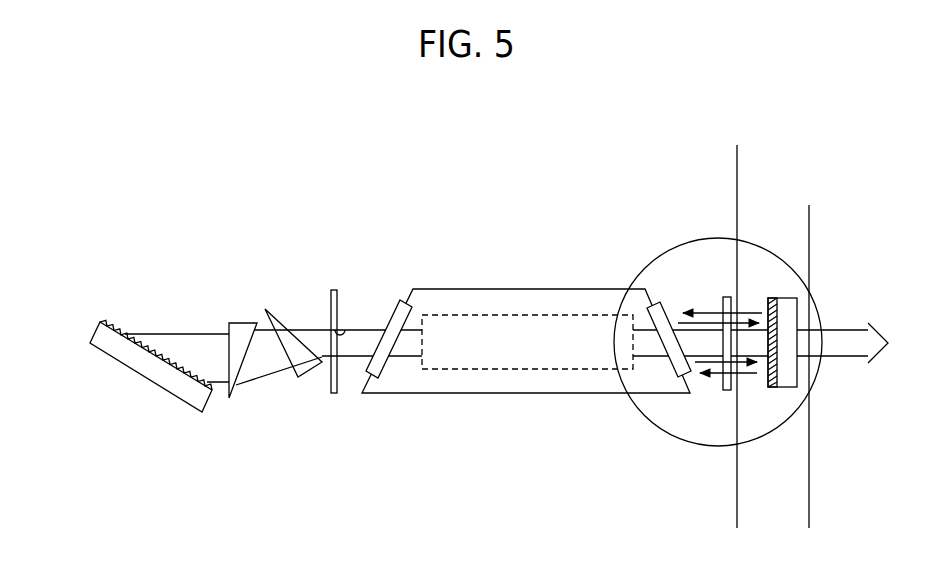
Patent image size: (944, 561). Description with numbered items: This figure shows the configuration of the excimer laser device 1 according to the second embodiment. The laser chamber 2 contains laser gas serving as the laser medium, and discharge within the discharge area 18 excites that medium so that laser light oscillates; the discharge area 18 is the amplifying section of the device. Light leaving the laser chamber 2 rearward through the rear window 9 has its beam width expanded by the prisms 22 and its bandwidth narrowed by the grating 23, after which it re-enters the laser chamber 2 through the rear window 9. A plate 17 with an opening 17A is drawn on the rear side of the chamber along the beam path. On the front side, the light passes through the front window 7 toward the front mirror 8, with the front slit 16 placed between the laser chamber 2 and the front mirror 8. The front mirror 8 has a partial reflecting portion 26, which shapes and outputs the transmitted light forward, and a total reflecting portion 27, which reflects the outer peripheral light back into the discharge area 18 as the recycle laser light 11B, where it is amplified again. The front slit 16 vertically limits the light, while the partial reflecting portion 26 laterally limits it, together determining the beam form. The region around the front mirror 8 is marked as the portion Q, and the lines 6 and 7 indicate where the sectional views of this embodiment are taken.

The excimer laser device 1 is at (843, 162).
The laser chamber 2 is at (535, 289).
The line 6- 6 is at (733, 157).
The front window 7 is at (813, 217).
The front mirror 8 is at (792, 297).
The rear window 9 is at (378, 372).
The recycle laser light 11B is at (697, 308).
The front slit 16 is at (727, 294).
The aperture plate 17 is at (333, 288).
The aperture 17A is at (344, 330).
The discharge area 18 is at (547, 370).
The prisms 22 is at (298, 378).
The grating 23 is at (168, 386).
The partial reflecting portion 26 is at (763, 388).
The total reflecting portion 27 is at (763, 302).
The portion Q is at (815, 300).